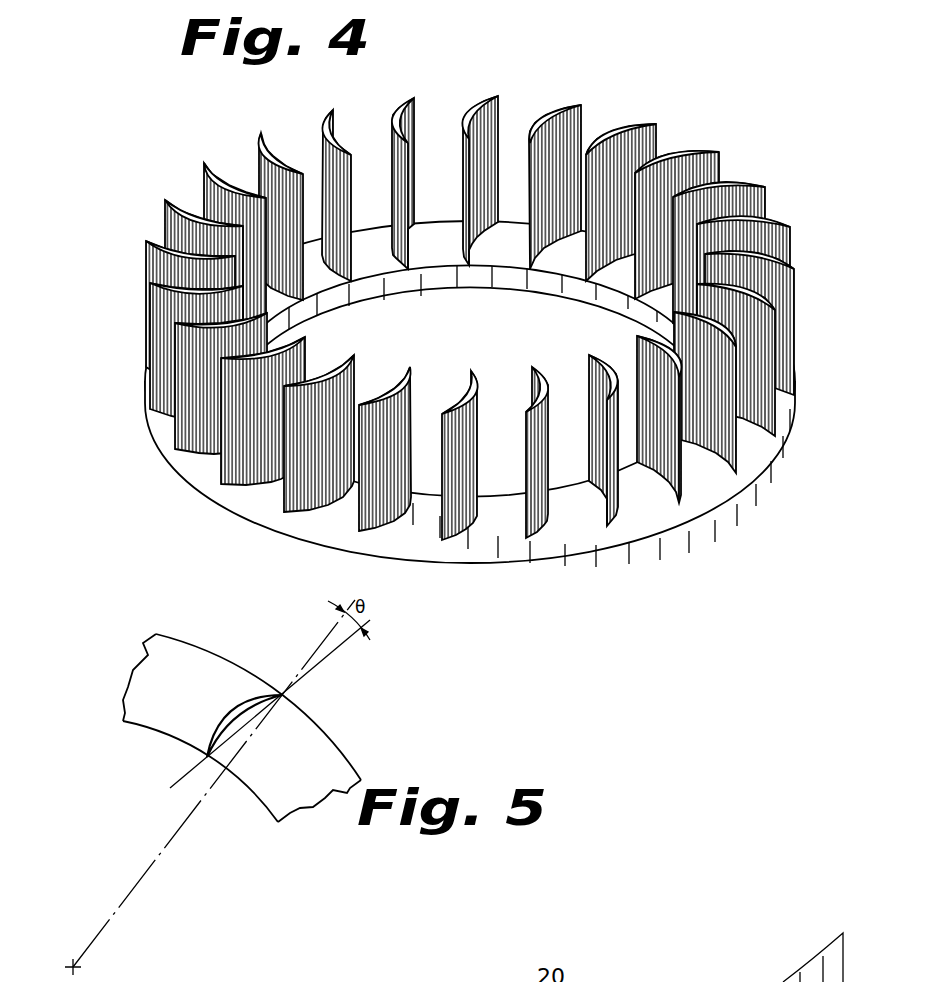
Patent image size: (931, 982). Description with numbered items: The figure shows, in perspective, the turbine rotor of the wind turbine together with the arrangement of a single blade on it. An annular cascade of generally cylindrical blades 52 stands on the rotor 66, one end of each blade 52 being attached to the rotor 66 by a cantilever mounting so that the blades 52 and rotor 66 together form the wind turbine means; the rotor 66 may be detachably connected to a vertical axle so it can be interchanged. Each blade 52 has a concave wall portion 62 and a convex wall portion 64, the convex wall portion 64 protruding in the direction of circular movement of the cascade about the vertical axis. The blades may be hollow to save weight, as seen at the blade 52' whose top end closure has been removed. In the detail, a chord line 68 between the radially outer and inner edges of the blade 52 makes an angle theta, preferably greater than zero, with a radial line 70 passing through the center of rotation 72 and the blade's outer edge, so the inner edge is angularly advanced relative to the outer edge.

In FIG. 5, the blade 52 is at (240, 676).
In FIG. 4, the blade 52' is at (496, 503).
In FIG. 4, the concave wall portion 62 is at (587, 402).
In FIG. 4, the convex wall portion 64 is at (612, 378).
In FIG. 4, the rotor 66 is at (572, 528).
In FIG. 5, the rotor 66 is at (143, 670).
In FIG. 5, the chord line 68 is at (323, 658).
In FIG. 5, the radial line 70 is at (320, 643).
In FIG. 5, the center of rotation 72 is at (70, 963).